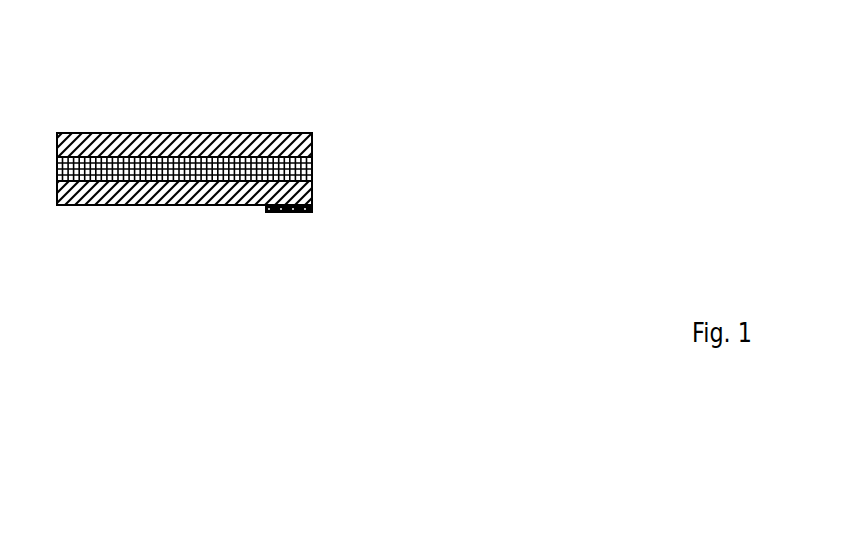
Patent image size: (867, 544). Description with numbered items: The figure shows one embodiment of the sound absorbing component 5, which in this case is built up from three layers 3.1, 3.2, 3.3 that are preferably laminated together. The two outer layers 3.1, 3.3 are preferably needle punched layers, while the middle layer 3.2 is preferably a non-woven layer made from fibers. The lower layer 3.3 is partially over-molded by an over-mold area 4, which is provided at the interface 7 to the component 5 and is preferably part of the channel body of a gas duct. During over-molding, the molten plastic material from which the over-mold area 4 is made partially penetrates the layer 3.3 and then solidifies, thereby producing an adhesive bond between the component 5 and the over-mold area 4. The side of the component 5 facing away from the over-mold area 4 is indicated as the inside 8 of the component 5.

The sound absorbing component 5 is at (196, 114).
The layer of the component 3.1 is at (303, 146).
The layer of the component 3.2 is at (305, 169).
The layer of the component 3.3 is at (308, 196).
The over-mold area 4 is at (273, 212).
The interface between channel body and component 7 is at (323, 213).
The inside of component 8 is at (188, 244).